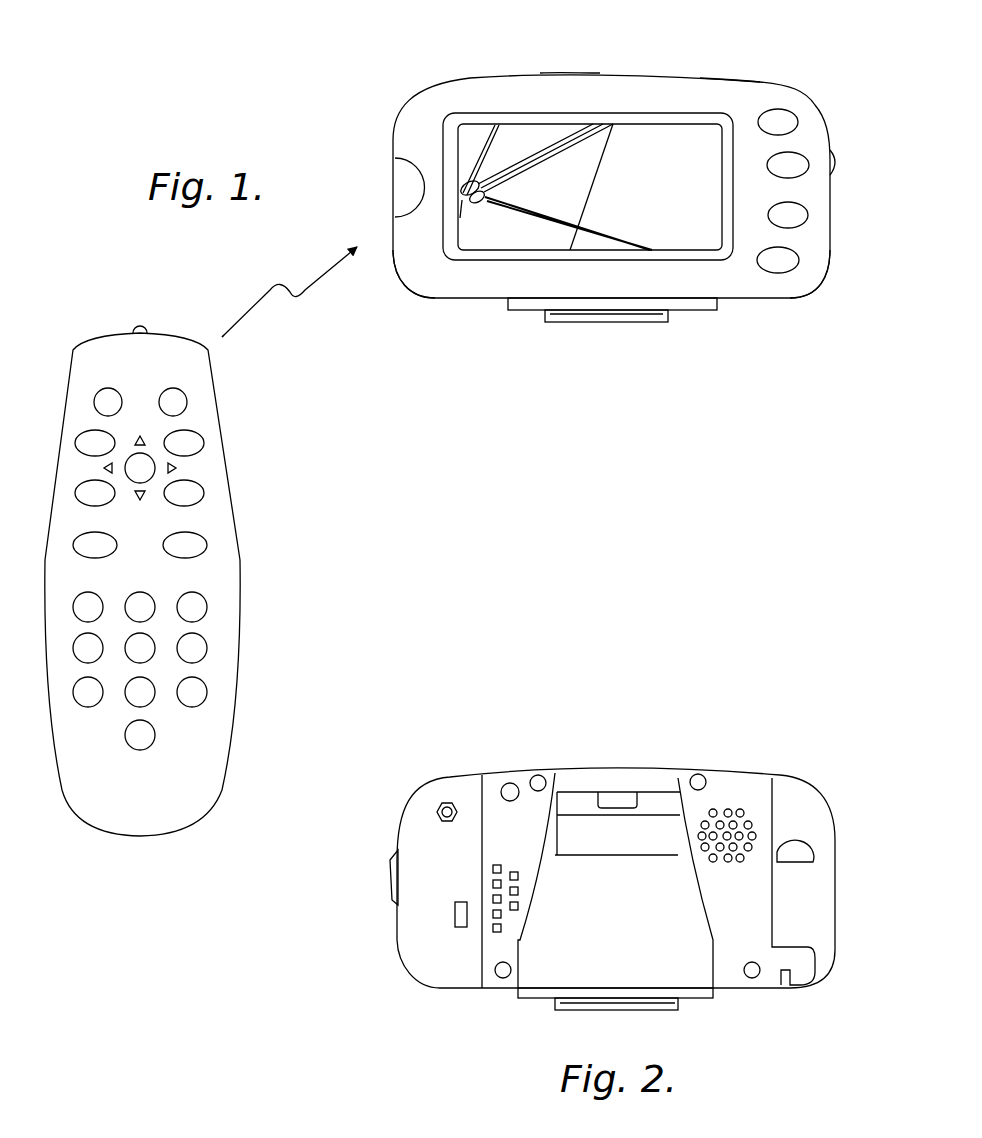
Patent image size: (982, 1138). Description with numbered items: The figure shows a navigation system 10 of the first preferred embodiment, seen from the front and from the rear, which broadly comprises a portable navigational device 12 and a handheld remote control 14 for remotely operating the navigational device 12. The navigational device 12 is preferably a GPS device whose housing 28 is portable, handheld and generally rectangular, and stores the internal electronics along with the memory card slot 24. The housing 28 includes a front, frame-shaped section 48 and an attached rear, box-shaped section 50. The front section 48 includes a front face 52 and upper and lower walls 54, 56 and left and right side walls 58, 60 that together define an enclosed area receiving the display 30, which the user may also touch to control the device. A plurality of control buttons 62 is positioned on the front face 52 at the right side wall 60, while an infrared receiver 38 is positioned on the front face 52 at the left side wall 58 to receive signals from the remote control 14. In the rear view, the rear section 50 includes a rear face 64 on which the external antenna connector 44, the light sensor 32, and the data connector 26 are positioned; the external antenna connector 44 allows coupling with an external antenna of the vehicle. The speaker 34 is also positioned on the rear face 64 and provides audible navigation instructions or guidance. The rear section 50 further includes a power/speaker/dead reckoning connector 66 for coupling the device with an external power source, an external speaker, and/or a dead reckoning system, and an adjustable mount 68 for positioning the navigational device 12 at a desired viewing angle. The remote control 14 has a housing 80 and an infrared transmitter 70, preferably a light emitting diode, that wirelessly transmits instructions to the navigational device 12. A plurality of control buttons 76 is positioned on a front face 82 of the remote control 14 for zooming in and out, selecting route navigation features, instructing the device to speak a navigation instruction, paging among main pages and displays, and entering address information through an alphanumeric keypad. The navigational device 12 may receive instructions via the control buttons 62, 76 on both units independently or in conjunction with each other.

In FIG. 1, the navigation system 10 is at (395, 406).
In FIG. 1, the navigational device 12 is at (537, 62).
In FIG. 1, the remote control 14 is at (74, 333).
In FIG. 2, the memory card slot 24 is at (810, 820).
In FIG. 2, the data connector 26 is at (455, 913).
In FIG. 1, the housing 28 is at (676, 72).
In FIG. 1, the display 30 is at (557, 130).
In FIG. 2, the light sensor 32 is at (510, 783).
In FIG. 2, the speaker 34 is at (732, 809).
In FIG. 1, the infrared receiver 38 is at (405, 176).
In FIG. 2, the external antenna connector 44 is at (440, 805).
In FIG. 1, the front, frame-shaped section 48 is at (467, 272).
In FIG. 2, the rear, box-shaped section 50 is at (620, 770).
In FIG. 1, the front face 52 is at (727, 287).
In FIG. 1, the upper wall 54 is at (731, 88).
In FIG. 1, the lower wall 56 is at (606, 287).
In FIG. 1, the left side wall 58 is at (410, 245).
In FIG. 1, the right side wall 60 is at (810, 193).
In FIG. 1, the control buttons 62 is at (787, 116).
In FIG. 2, the rear face 64 is at (440, 978).
In FIG. 2, the power/speaker/dead reckoning connector 66 is at (497, 912).
In FIG. 1, the adjustable mount 68 is at (560, 322).
In FIG. 2, the adjustable mount 68 is at (667, 980).
In FIG. 1, the infrared transmitter 70 is at (150, 323).
In FIG. 1, the control buttons 76 is at (196, 484).
In FIG. 1, the housing 80 is at (246, 591).
In FIG. 1, the front face 82 is at (230, 525).